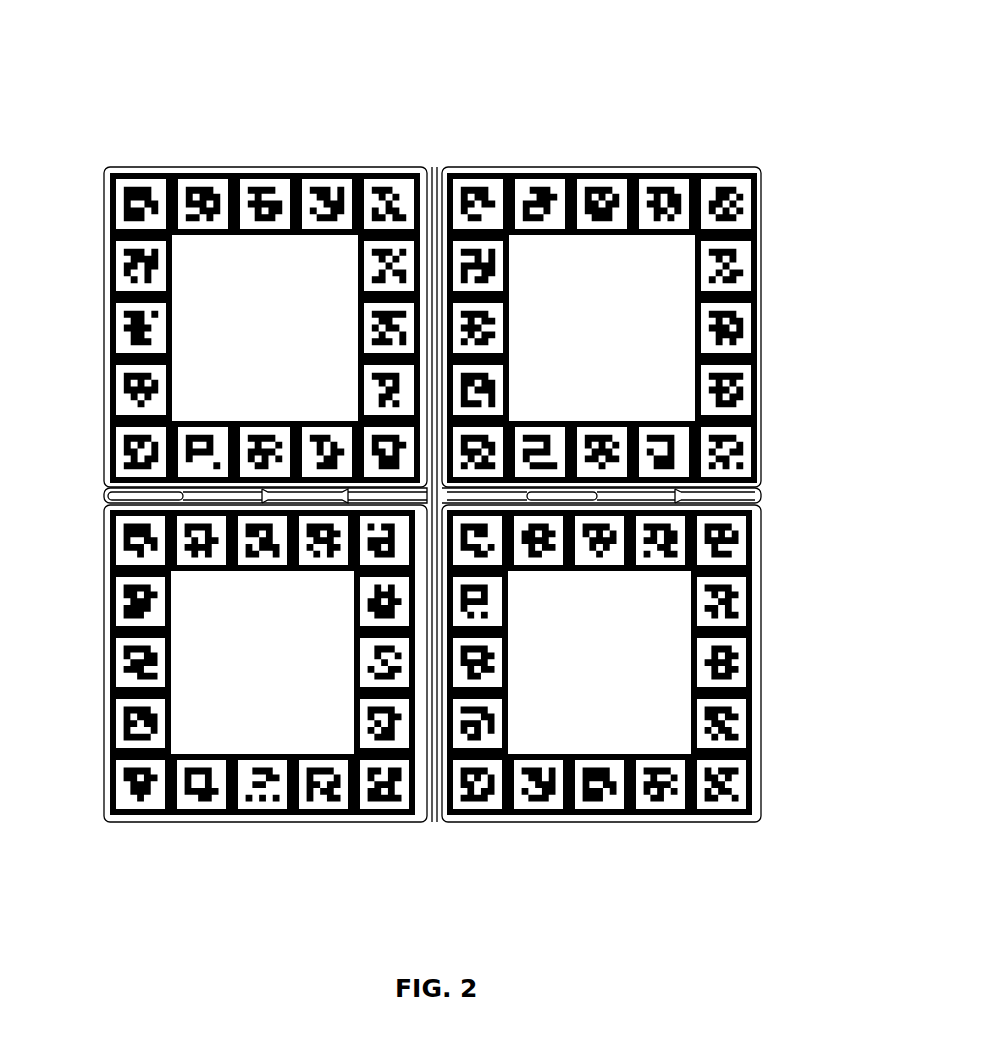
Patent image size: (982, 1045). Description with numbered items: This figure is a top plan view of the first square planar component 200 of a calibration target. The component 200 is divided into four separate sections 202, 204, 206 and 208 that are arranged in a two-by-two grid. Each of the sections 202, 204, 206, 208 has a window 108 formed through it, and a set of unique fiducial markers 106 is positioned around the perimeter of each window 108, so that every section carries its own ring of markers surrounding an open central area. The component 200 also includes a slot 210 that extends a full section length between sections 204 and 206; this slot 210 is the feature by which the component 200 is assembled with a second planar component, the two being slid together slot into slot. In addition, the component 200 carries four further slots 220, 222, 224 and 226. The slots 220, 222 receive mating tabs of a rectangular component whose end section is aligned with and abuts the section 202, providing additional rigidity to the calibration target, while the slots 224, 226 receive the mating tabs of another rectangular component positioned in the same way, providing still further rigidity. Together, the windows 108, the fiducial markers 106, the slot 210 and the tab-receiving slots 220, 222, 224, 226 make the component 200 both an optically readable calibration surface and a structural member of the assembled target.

The first square planar component 200 is at (598, 120).
The section 202 is at (183, 167).
The section 204 is at (176, 824).
The section 206 is at (765, 688).
The section 208 is at (762, 190).
The fiducial markers 106 is at (487, 192).
The window 108 is at (280, 331).
The slot 210 is at (432, 824).
The slot 220 is at (765, 497).
The slot 222 is at (280, 497).
The slot 224 is at (104, 495).
The slot 226 is at (552, 490).